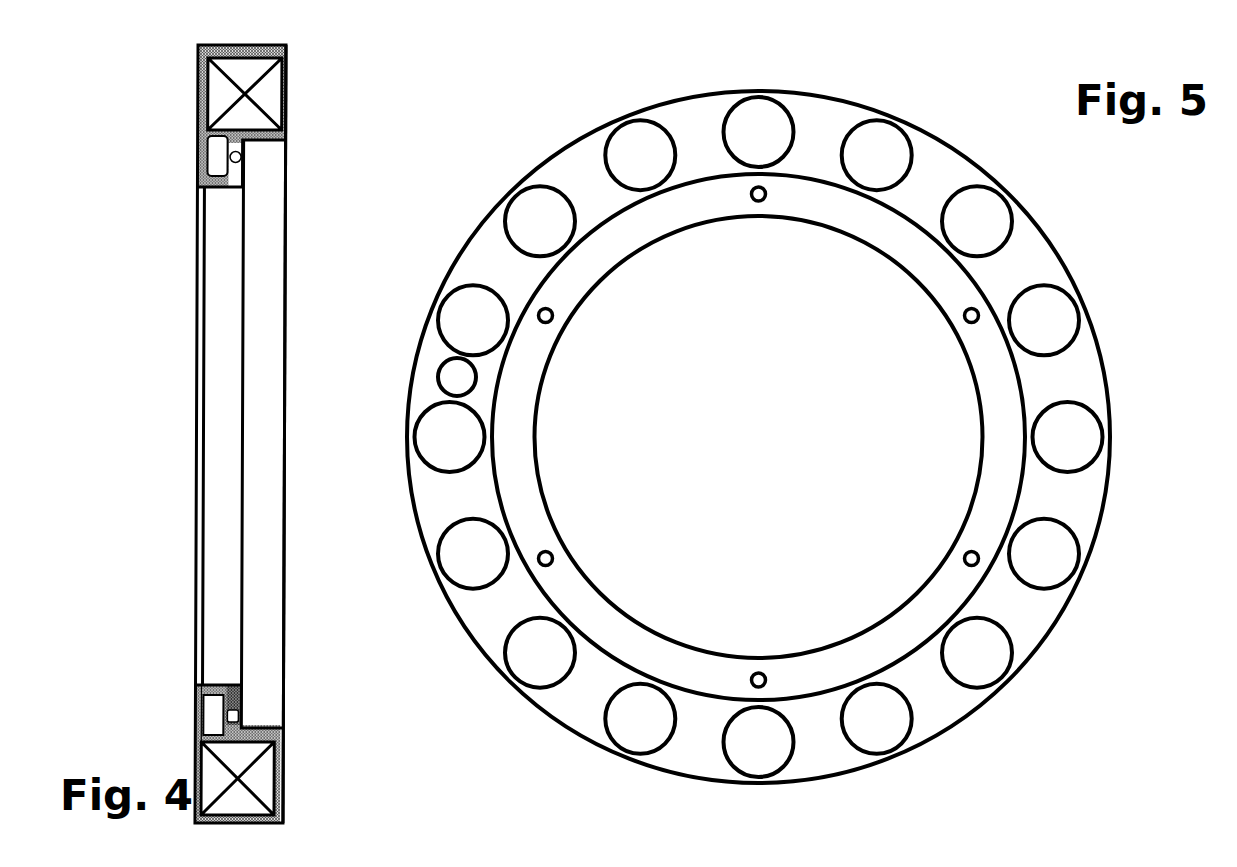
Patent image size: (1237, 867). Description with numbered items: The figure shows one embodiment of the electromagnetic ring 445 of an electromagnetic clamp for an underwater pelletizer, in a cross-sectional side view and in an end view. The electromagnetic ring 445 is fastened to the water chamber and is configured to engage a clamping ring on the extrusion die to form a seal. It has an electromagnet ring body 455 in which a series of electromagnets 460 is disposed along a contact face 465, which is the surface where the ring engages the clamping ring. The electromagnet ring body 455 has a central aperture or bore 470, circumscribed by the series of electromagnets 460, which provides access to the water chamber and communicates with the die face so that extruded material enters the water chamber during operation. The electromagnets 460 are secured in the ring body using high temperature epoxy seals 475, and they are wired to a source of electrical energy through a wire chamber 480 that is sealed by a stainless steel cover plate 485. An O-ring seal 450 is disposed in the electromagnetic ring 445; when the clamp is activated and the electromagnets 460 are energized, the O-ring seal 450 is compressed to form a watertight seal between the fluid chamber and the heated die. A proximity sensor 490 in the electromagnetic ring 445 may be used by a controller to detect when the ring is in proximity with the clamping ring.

In FIG. 4, the electromagnetic ring 445 is at (300, 268).
In FIG. 4, the O-ring seal 450 is at (241, 158).
In FIG. 4, the electromagnet ring body 455 is at (258, 727).
In FIG. 5, the electromagnet ring body 455 is at (830, 668).
In FIG. 4, the electromagnets 460 is at (218, 93).
In FIG. 5, the electromagnets 460 is at (538, 217).
In FIG. 4, the contact face 465 is at (197, 97).
In FIG. 5, the contact face 465 is at (1038, 500).
In FIG. 4, the bore 470 is at (254, 445).
In FIG. 5, the bore 470 is at (765, 452).
In FIG. 4, the high temperature epoxy seals 475 is at (286, 97).
In FIG. 4, the wire chamber 480 is at (216, 153).
In FIG. 4, the stainless steel cover plate 485 is at (195, 703).
In FIG. 5, the proximity sensor 490 is at (455, 373).